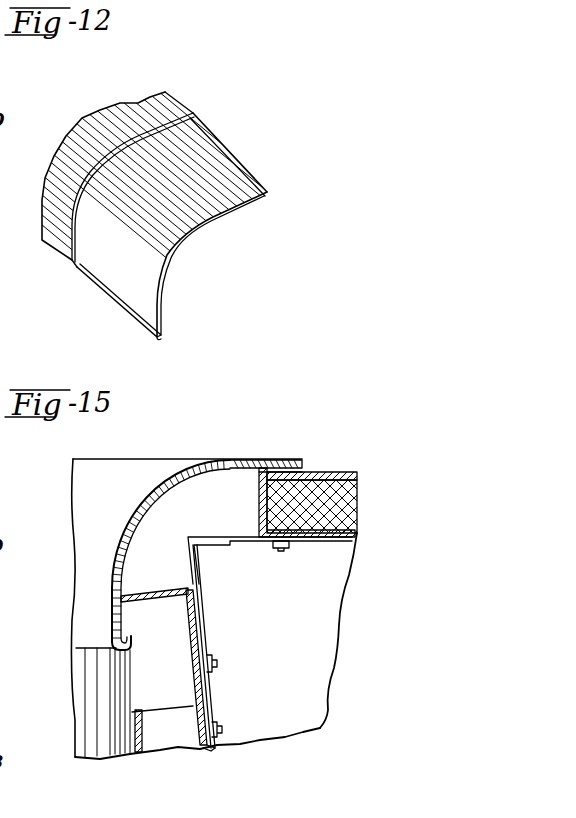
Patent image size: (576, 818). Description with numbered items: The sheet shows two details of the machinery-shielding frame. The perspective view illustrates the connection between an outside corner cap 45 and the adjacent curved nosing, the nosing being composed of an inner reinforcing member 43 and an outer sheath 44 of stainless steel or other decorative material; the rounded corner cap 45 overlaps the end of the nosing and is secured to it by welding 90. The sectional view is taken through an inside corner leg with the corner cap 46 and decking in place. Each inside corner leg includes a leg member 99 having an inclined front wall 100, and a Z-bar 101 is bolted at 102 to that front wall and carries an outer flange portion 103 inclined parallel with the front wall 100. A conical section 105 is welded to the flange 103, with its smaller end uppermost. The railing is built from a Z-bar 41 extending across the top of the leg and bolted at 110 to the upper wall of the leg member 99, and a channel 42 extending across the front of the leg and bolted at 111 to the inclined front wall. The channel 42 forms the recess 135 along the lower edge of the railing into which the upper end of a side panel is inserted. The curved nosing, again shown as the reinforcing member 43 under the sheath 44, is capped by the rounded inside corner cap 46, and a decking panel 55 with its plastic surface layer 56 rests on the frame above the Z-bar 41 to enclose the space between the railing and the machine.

In FIG. 12, the corner cap 45 is at (148, 108).
In FIG. 12, the welding 90 is at (188, 122).
In FIG. 12, the outer sheath 44 is at (232, 172).
In FIG. 15, the outer sheath 44 is at (228, 460).
In FIG. 12, the inner reinforcing member 43 is at (218, 208).
In FIG. 15, the inner reinforcing member 43 is at (150, 508).
In FIG. 15, the corner cap 46 is at (87, 500).
In FIG. 15, the surface layer 56 is at (307, 470).
In FIG. 15, the decking panel 55 is at (330, 505).
In FIG. 15, the Z-bar 41 is at (257, 512).
In FIG. 15, the channel 42 is at (158, 588).
In FIG. 15, the recess 135 is at (150, 640).
In FIG. 15, the bolt 110 is at (280, 551).
In FIG. 15, the bolt 111 is at (217, 663).
In FIG. 15, the bolt 102 is at (223, 730).
In FIG. 15, the conical section 105 is at (86, 695).
In FIG. 15, the outer flange portion 103 is at (137, 753).
In FIG. 15, the Z-bar 101 is at (172, 740).
In FIG. 15, the inclined front wall 100 is at (212, 745).
In FIG. 15, the leg member 99 is at (305, 726).